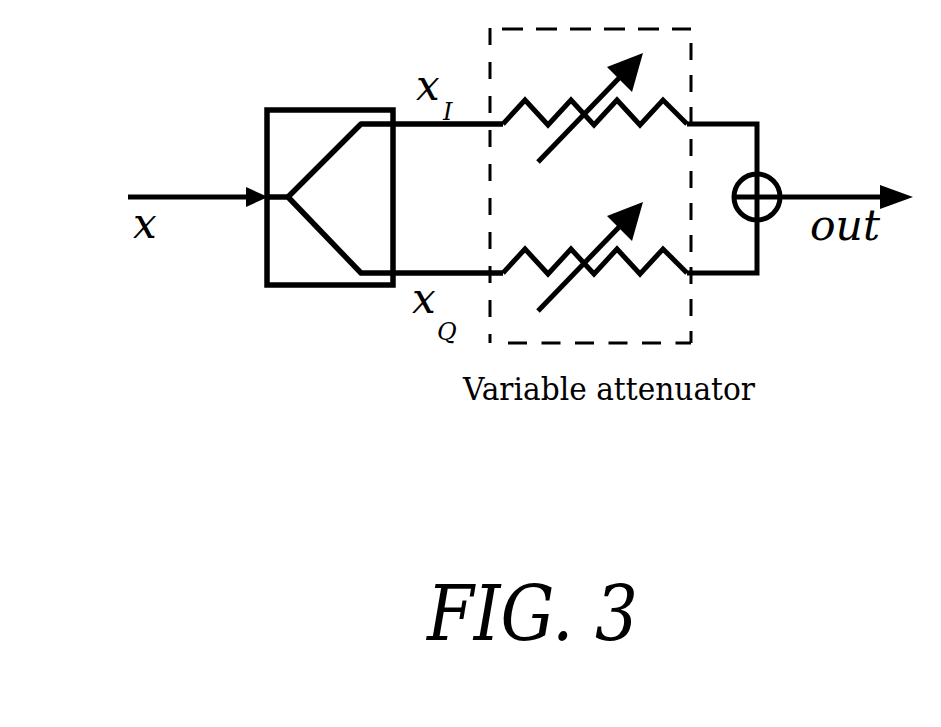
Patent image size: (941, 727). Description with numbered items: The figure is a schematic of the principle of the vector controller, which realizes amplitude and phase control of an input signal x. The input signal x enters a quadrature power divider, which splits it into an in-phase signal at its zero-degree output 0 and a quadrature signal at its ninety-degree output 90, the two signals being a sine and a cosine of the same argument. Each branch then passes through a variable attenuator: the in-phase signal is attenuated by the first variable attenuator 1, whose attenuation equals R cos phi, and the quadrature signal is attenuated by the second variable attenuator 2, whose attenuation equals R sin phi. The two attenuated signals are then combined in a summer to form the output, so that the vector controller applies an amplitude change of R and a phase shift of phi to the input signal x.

The 0 degree (in-phase) output path of 90 degree hybrid 0 is at (395, 158).
The 90 degree (quadrature) output path of 90 degree hybrid 90 is at (395, 235).
The variable attenuator for the in-phase signal 1 is at (655, 107).
The variable attenuator for the quadrature signal 2 is at (654, 276).